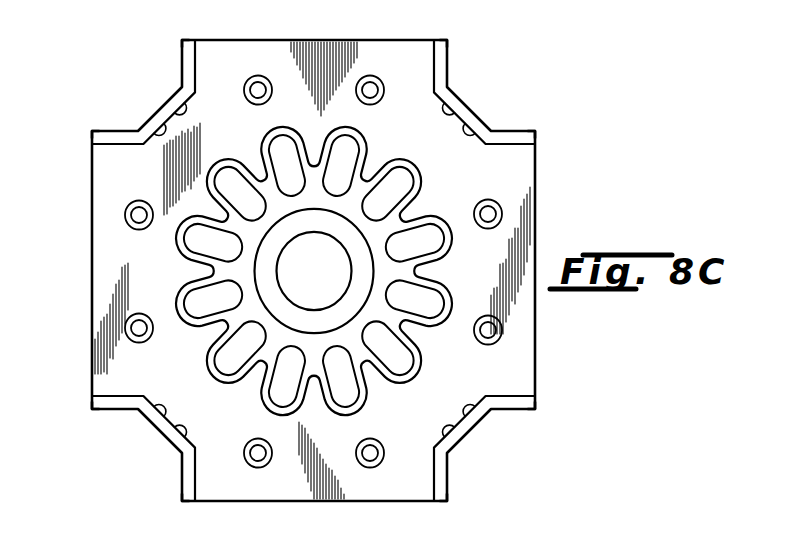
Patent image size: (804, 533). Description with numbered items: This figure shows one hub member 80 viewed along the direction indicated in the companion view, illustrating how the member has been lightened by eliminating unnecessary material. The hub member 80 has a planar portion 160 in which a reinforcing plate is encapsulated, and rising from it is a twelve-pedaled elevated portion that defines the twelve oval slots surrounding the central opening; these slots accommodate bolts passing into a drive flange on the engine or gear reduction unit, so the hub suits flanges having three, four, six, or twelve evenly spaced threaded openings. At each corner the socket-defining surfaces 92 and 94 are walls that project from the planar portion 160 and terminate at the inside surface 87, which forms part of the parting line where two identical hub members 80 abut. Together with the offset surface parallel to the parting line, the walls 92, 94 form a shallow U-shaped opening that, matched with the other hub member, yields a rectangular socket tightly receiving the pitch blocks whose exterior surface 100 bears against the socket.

The hub member 80 is at (548, 414).
The inside surface 87 is at (183, 64).
The socket-defining surface 92 is at (432, 50).
The socket-defining surface 94 is at (220, 30).
The exterior surface 100 is at (384, 58).
The planar portion 160 is at (432, 133).